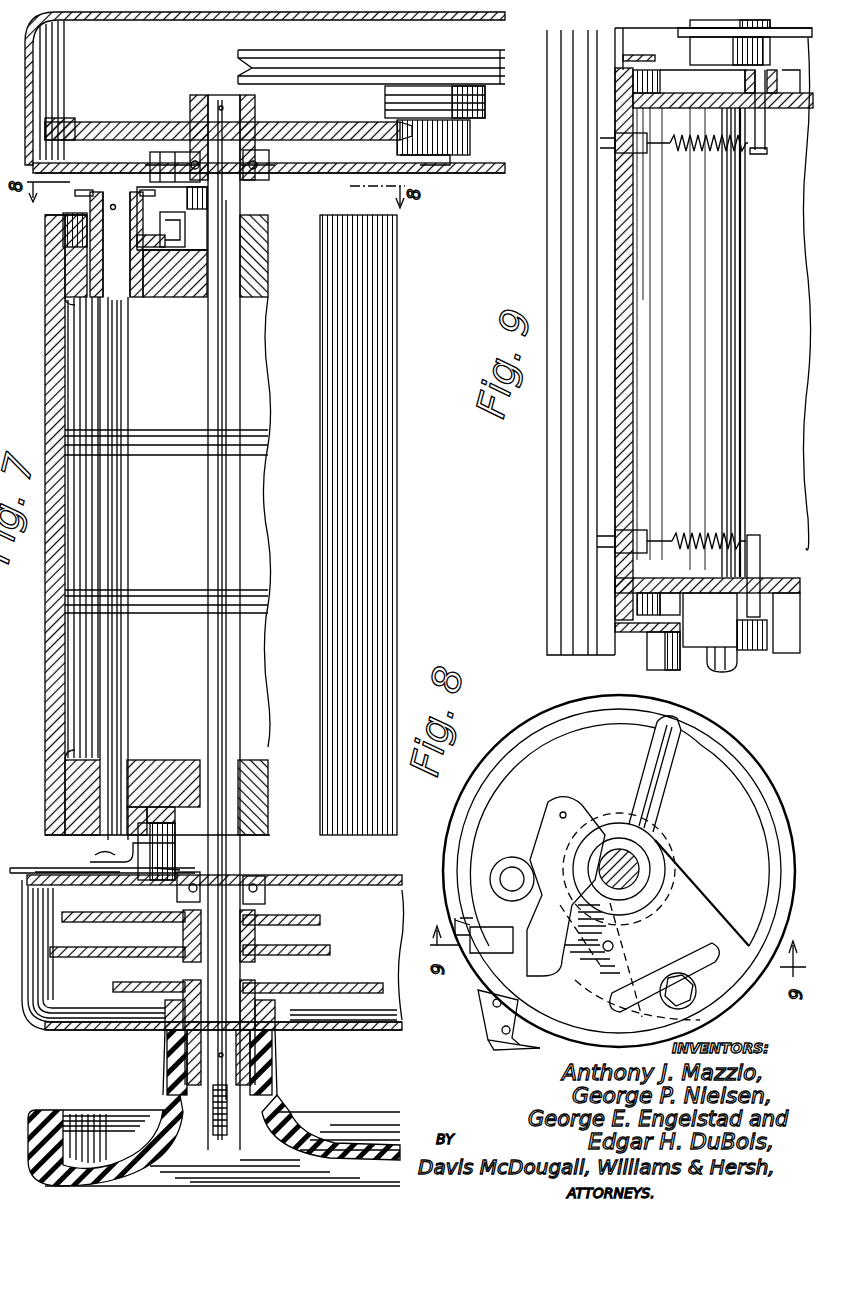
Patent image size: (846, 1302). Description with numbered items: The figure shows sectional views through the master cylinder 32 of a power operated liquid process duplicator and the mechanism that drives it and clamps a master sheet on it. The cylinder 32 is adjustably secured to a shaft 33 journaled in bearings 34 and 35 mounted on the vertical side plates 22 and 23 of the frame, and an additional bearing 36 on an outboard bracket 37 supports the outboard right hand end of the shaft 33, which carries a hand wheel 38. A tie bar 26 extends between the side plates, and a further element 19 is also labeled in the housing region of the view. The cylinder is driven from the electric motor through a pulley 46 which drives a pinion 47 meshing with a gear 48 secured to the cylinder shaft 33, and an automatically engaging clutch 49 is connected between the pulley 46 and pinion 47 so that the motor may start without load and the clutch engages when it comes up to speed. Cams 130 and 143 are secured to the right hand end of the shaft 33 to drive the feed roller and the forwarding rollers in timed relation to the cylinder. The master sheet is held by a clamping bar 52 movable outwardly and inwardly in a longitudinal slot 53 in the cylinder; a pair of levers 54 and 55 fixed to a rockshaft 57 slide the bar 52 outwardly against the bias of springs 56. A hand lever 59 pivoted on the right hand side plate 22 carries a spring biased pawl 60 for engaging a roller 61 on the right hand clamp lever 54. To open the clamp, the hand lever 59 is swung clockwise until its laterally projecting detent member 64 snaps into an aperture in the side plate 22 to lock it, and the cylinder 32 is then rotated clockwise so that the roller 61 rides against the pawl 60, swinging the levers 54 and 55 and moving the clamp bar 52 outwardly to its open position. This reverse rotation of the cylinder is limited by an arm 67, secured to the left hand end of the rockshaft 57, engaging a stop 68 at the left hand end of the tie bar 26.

In FIG. 7, the fin plate 19 is at (376, 990).
In FIG. 7, the side plate 22 is at (347, 890).
In FIG. 7, the side plate 23 is at (328, 175).
In FIG. 8, the tie bar 26 is at (492, 1047).
In FIG. 7, the master cylinder 32 is at (45, 712).
In FIG. 8, the master cylinder 32 is at (512, 740).
In FIG. 9, the master cylinder 32 is at (790, 655).
In FIG. 7, the shaft 33 is at (198, 520).
In FIG. 8, the shaft 33 is at (615, 858).
In FIG. 9, the shaft 33 is at (745, 335).
In FIG. 7, the bearing 34 is at (256, 880).
In FIG. 7, the bearing 35 is at (262, 178).
In FIG. 7, the additional bearing 36 is at (268, 1040).
In FIG. 7, the outboard bracket 37 is at (268, 1010).
In FIG. 7, the hand wheel 38 is at (400, 1135).
In FIG. 7, the pulley 46 is at (302, 70).
In FIG. 7, the pinion 47 is at (472, 124).
In FIG. 7, the gear 48 is at (70, 122).
In FIG. 7, the automatically engaging clutch 49 is at (378, 111).
In FIG. 8, the clamping bar 52 is at (455, 925).
In FIG. 9, the clamping bar 52 is at (630, 430).
In FIG. 8, the longitudinal slot 53 is at (456, 920).
In FIG. 7, the clamp lever 54 is at (152, 803).
In FIG. 8, the clamp lever 54 is at (580, 1000).
In FIG. 9, the clamp lever 54 is at (650, 620).
In FIG. 7, the clamp lever 55 is at (162, 242).
In FIG. 8, the clamp lever 55 is at (520, 823).
In FIG. 9, the clamp lever 55 is at (648, 58).
In FIG. 9, the spring 56 is at (705, 150).
In FIG. 7, the rockshaft 57 is at (128, 668).
In FIG. 8, the rockshaft 57 is at (511, 878).
In FIG. 7, the hand lever 59 is at (18, 868).
In FIG. 7, the spring biased pawl 60 is at (125, 858).
In FIG. 7, the roller 61 is at (180, 845).
In FIG. 9, the roller 61 is at (700, 652).
In FIG. 7, the detent member 64 is at (42, 868).
In FIG. 8, the stop arm 67 is at (565, 995).
In FIG. 8, the stop 68 is at (480, 995).
In FIG. 7, the cam 130 is at (320, 920).
In FIG. 7, the cam 143 is at (331, 950).